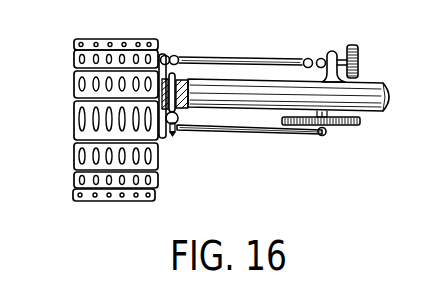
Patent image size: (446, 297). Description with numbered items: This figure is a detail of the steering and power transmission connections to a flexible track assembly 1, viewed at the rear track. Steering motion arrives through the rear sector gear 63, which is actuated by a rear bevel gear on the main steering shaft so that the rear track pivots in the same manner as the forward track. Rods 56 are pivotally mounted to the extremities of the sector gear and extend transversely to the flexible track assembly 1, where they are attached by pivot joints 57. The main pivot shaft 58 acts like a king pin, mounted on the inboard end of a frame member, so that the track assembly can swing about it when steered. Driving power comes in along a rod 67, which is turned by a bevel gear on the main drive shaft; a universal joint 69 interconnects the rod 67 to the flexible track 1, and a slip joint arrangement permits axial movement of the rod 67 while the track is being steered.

The flexible track assembly 1 is at (63, 83).
The rods 56 is at (250, 133).
The pivot joints 57 is at (171, 134).
The main pivot shaft 58 is at (258, 88).
The rear sector gear 63 is at (360, 122).
The rods 67 is at (241, 57).
The universal joint 69 is at (177, 57).